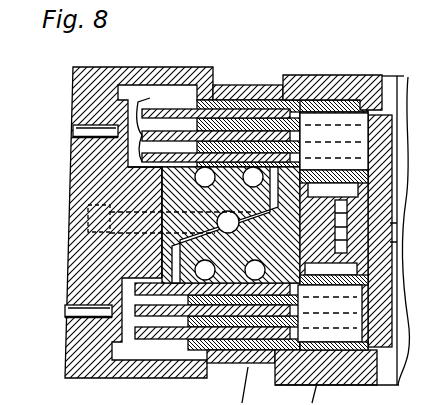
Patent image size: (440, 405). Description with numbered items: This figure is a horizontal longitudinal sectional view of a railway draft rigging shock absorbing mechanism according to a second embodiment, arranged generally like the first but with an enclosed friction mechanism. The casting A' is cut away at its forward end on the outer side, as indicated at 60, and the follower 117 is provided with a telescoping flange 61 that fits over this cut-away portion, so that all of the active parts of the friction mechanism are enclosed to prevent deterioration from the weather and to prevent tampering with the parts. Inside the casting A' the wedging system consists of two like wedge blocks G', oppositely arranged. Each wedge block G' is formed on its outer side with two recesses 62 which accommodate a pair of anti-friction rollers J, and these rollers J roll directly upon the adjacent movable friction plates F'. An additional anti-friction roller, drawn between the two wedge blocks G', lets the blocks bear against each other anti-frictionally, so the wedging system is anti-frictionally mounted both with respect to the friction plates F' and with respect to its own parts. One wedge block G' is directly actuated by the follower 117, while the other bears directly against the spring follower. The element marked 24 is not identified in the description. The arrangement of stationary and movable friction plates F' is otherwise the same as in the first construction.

The follower 117 is at (76, 176).
The cut-away portion of casting 60 is at (252, 86).
The telescoping flange 61 is at (173, 68).
The movable friction plate F' is at (143, 129).
The recess 62 is at (231, 225).
The anti-friction roller J is at (230, 223).
The central ball 24 is at (228, 222).
The wedge block G' is at (143, 237).
The casting A' is at (342, 215).